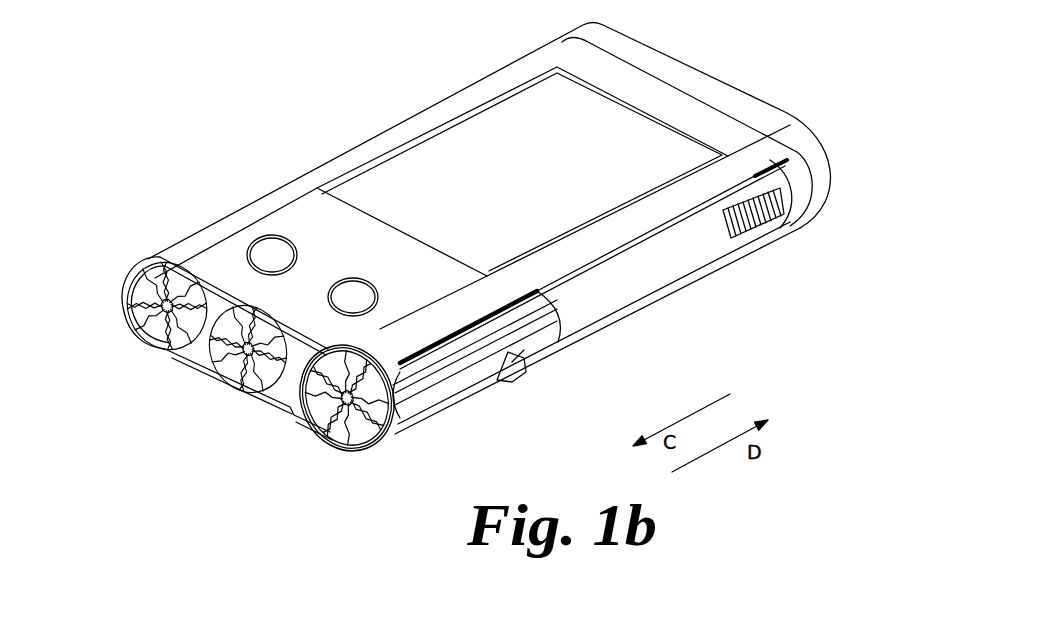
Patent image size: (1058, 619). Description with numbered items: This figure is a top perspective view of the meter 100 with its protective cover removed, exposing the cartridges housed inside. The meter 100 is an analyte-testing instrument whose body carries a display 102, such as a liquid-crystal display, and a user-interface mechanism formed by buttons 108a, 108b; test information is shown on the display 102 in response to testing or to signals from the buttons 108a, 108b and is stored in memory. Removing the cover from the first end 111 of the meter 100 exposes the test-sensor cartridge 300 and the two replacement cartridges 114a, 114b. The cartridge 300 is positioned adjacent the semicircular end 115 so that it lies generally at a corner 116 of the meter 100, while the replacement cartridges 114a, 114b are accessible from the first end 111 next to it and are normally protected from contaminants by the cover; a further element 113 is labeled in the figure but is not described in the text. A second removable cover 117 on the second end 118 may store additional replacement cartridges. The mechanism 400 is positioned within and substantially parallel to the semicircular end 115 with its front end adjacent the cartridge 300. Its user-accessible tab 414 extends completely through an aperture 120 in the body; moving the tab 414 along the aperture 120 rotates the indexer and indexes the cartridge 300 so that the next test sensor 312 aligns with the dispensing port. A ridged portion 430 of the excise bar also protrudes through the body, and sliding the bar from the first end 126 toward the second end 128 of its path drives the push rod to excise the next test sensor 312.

The meter 100 is at (171, 67).
The display 102 is at (470, 128).
The button 108a is at (262, 247).
The button 108b is at (347, 290).
The first end 111 is at (112, 248).
The fan 113 is at (372, 437).
The replacement cartridge 114a is at (233, 367).
The replacement cartridge 114b is at (157, 327).
The semicircular end 115 is at (649, 338).
The corner 116 is at (298, 448).
The second removable cover 117 is at (717, 90).
The second end 118 is at (829, 249).
The aperture 120 is at (525, 365).
The first end 126 is at (790, 187).
The second end 128 is at (417, 400).
The test-sensor cartridge 300 is at (387, 427).
The next test sensor 312 is at (340, 427).
The mechanism 400 is at (729, 308).
The user-accessible tab 414 is at (507, 366).
The ridged portion 430 is at (757, 223).